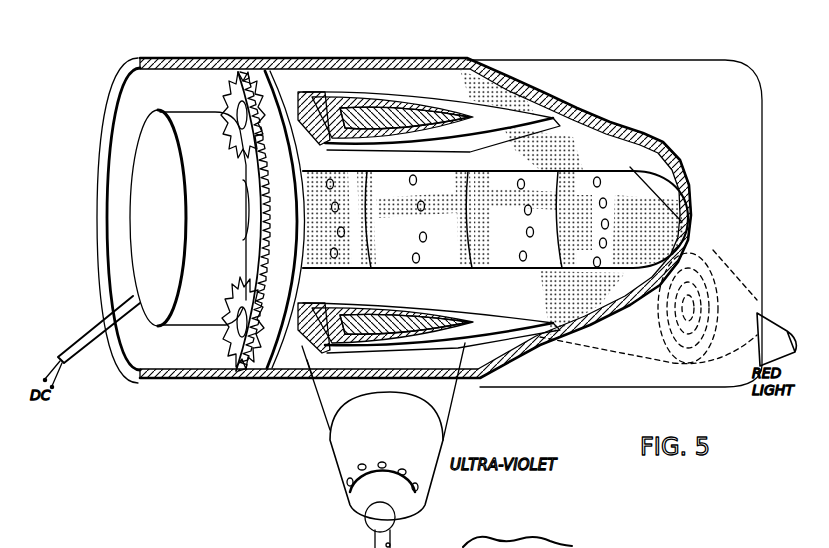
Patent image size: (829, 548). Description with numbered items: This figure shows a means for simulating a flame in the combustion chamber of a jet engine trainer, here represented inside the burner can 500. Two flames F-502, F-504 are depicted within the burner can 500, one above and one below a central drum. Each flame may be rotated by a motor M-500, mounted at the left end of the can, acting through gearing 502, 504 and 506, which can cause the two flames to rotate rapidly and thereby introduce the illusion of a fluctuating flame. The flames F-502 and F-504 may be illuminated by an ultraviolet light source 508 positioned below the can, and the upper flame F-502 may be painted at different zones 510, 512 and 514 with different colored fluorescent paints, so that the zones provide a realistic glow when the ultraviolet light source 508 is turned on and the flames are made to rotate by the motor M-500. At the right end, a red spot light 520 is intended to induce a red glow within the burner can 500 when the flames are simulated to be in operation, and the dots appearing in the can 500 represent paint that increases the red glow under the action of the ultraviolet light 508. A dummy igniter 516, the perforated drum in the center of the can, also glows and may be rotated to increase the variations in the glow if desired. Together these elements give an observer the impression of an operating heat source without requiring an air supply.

The burner can 500 is at (662, 77).
The gearing 502 is at (240, 160).
The gearing 504 is at (233, 100).
The gearing 506 is at (233, 362).
The ultraviolet light source 508 is at (335, 434).
The painted zone 510 is at (316, 95).
The painted zone 512 is at (407, 107).
The painted zone 514 is at (488, 110).
The dummy igniter 516 is at (620, 187).
The red spot light 520 is at (757, 313).
The flame F-502 is at (503, 115).
The flame F-504 is at (463, 380).
The motor M-500 is at (140, 245).